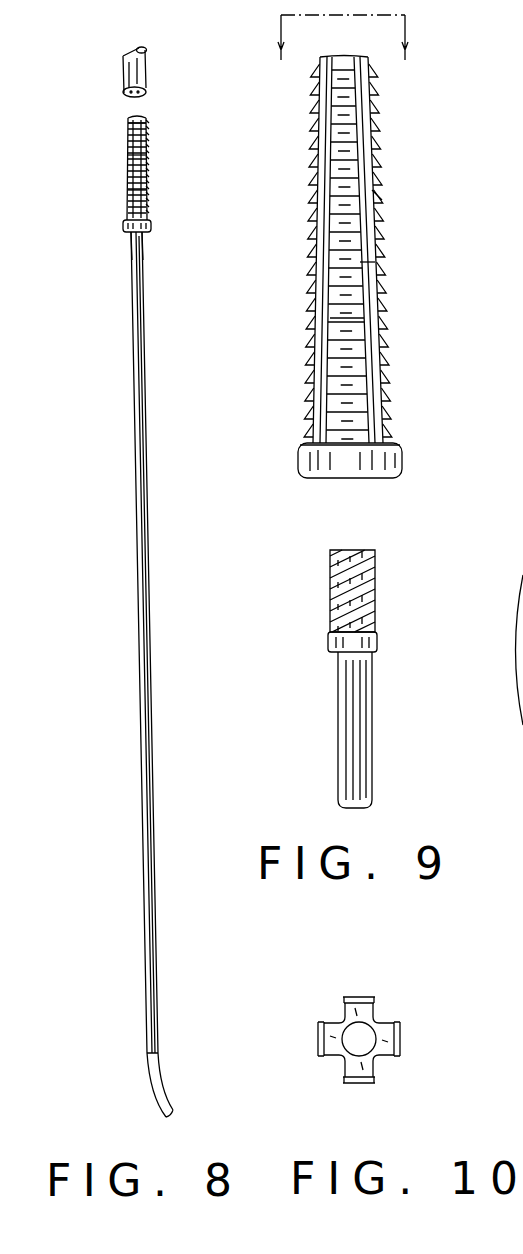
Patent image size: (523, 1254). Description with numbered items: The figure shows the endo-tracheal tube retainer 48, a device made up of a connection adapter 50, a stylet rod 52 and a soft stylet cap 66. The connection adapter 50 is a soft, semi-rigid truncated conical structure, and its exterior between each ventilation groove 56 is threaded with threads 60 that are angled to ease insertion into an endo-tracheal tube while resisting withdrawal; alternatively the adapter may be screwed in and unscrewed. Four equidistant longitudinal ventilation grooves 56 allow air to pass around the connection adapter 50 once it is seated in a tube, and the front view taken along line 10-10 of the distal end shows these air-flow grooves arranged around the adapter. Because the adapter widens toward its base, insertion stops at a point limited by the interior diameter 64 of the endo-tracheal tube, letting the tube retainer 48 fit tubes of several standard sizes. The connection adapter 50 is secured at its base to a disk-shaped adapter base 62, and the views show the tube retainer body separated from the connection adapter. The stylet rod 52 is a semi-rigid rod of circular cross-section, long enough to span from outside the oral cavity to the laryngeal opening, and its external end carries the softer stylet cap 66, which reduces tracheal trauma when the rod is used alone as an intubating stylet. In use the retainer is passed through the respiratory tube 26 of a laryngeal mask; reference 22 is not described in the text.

In FIG. 8, the respiratory tube 26 is at (148, 74).
In FIG. 8, the tube retainer 48 is at (160, 155).
In FIG. 9, the tube retainer 48 is at (393, 147).
In FIG. 10, the tube retainer 48 is at (348, 1034).
In FIG. 8, the ventilation groove 56 is at (128, 128).
In FIG. 9, the ventilation groove 56 is at (370, 313).
In FIG. 10, the ventilation groove 56 is at (338, 1020).
In FIG. 8, the thread 60 is at (128, 157).
In FIG. 9, the thread 60 is at (381, 198).
In FIG. 10, the thread 60 is at (360, 1085).
In FIG. 8, the connection adapter 50 is at (127, 193).
In FIG. 9, the connection adapter 50 is at (383, 267).
In FIG. 10, the connection adapter 50 is at (358, 995).
In FIG. 8, the adapter base 62 is at (123, 228).
In FIG. 9, the adapter base 62 is at (402, 462).
In FIG. 8, the stylet cap 66 is at (130, 239).
In FIG. 9, the stylet cap 66 is at (372, 600).
In FIG. 8, the stylet rod 52 is at (135, 407).
In FIG. 9, the stylet rod 52 is at (372, 705).
In FIG. 9, the interior diameter 64 is at (350, 478).
In FIG. 9, the line 10- 10 is at (346, 55).
In FIG. 9, the adjacent component 22 is at (515, 625).